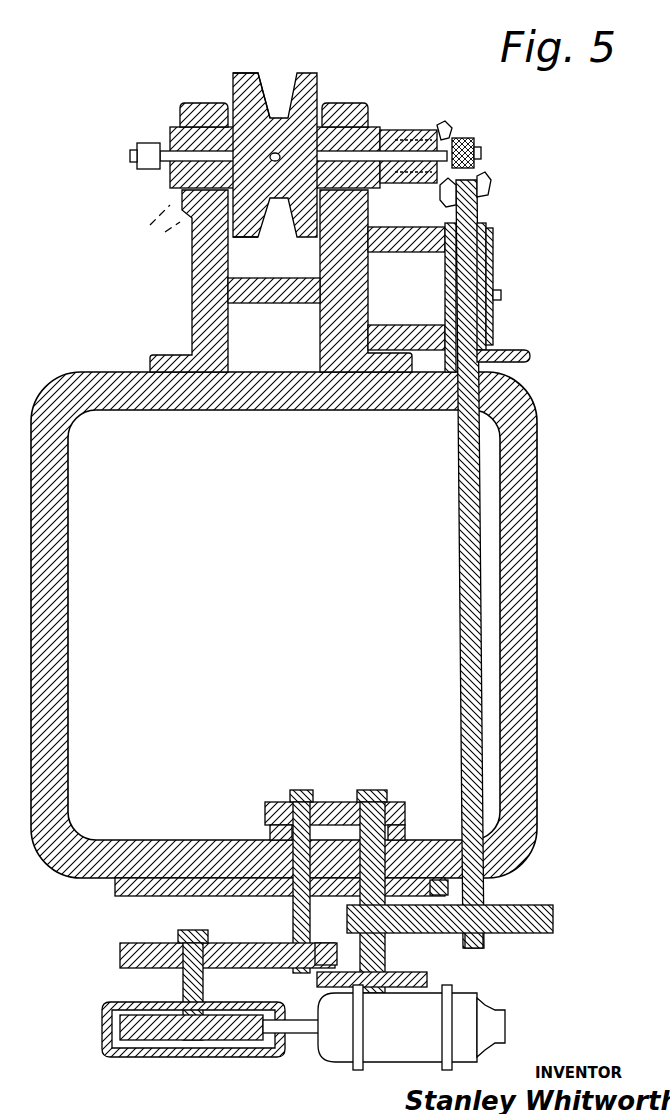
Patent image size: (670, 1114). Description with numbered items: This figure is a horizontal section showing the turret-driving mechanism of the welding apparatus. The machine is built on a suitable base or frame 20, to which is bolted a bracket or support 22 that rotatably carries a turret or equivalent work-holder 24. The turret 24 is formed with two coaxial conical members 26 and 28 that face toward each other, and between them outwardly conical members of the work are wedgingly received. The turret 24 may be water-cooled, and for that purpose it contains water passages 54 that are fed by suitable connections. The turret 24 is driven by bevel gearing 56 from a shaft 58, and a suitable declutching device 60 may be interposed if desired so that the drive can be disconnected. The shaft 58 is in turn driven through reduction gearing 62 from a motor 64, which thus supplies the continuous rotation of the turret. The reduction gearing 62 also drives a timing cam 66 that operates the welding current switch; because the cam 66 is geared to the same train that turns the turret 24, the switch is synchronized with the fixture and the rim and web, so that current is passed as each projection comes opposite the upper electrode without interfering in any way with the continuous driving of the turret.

The base or frame 20 is at (520, 605).
The bracket or support 22 is at (210, 308).
The turret or work-holder 24 is at (367, 113).
The conical member 26 is at (305, 85).
The conical member 28 is at (262, 85).
The water passages 54 is at (170, 175).
The bevel gearing 56 is at (450, 130).
The shaft 58 is at (473, 495).
The declutching device 60 is at (510, 345).
The reduction gearing 62 is at (345, 808).
The motor 64 is at (390, 1035).
The timing cam 66 is at (427, 979).